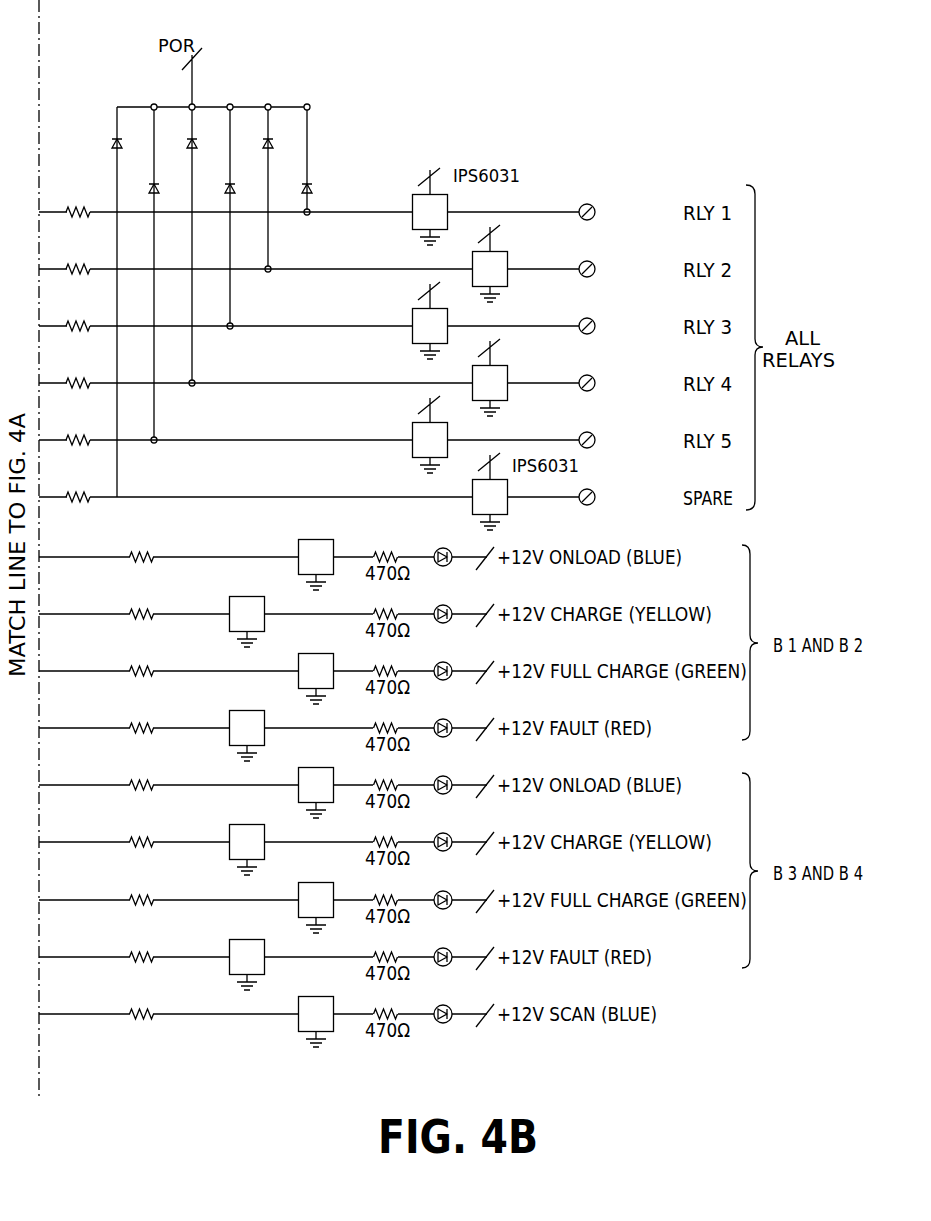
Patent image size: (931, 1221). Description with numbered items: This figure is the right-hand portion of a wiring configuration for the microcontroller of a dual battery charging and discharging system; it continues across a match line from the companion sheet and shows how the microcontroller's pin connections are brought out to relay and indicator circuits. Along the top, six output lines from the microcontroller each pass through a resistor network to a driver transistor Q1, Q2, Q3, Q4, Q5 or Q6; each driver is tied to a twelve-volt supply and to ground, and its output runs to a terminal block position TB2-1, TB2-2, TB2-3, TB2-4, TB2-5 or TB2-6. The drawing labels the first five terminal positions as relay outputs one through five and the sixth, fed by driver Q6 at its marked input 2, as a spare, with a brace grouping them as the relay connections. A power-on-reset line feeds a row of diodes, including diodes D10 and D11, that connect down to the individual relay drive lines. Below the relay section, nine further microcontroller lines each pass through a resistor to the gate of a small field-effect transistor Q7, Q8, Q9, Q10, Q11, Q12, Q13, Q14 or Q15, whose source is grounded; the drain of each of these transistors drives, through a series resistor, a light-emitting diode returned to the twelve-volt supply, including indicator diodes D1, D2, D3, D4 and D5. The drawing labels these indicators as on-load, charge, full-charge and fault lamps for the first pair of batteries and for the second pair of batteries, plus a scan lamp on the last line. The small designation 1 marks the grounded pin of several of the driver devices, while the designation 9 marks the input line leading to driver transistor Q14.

The relay driver transistor IPS6031 Q1 is at (422, 202).
The relay driver transistor Q2 is at (484, 261).
The relay driver transistor Q3 is at (424, 318).
The relay driver transistor Q4 is at (484, 375).
The relay driver transistor Q5 is at (424, 432).
The spare relay driver transistor Q6 is at (484, 489).
The LED driver MOSFET BS170 Q7 is at (317, 554).
The LED driver MOSFET Q8 is at (248, 621).
The LED driver MOSFET Q9 is at (317, 680).
The LED driver MOSFET Q10 is at (248, 735).
The LED driver MOSFET Q11 is at (317, 792).
The LED driver MOSFET Q12 is at (248, 849).
The LED driver MOSFET Q13 is at (317, 907).
The LED driver MOSFET BS170 Q14 is at (248, 955).
The LED driver MOSFET BS170 Q15 is at (317, 1013).
The onload LED (blue) D1 is at (445, 547).
The charge LED (yellow) D2 is at (445, 604).
The full charge LED (green) D3 is at (445, 661).
The fault LED (red) D4 is at (445, 718).
The onload LED (blue) D5 is at (445, 775).
The POR diode D10 is at (255, 134).
The POR diode D11 is at (293, 179).
The terminal block relay 1 TB2-1 is at (617, 213).
The terminal block relay 2 TB2-2 is at (617, 270).
The terminal block relay 3 TB2-3 is at (617, 327).
The terminal block relay 4 TB2-4 is at (617, 384).
The terminal block relay 5 TB2-5 is at (617, 441).
The terminal block spare TB2-6 is at (617, 498).
The reference 9 is at (108, 946).
The pin 2 is at (466, 490).
The pin 1 is at (333, 698).